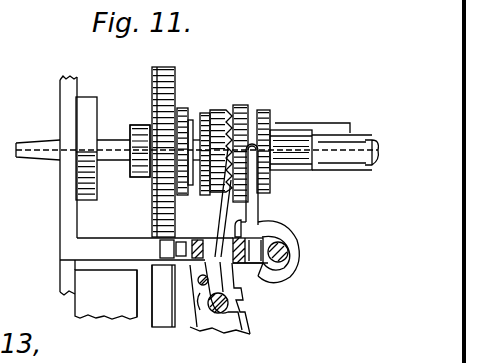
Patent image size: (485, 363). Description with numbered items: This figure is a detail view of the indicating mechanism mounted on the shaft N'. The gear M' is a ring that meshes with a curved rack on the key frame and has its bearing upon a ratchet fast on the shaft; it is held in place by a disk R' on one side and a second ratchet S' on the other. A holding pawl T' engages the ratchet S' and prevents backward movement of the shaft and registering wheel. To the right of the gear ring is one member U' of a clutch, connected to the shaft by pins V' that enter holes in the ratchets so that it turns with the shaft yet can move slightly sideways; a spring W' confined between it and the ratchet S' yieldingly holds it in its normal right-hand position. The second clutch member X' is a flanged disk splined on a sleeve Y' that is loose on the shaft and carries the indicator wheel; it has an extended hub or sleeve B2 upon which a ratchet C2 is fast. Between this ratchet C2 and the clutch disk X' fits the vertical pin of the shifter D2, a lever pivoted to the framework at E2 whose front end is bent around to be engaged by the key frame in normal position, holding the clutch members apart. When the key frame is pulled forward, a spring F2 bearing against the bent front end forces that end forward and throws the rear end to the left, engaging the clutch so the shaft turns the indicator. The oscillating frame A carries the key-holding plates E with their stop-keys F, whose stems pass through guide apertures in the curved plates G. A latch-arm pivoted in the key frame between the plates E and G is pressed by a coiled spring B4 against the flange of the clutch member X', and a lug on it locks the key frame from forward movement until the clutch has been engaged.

The gear M' is at (150, 145).
The disk R' is at (135, 132).
The second ratchet S' is at (191, 130).
The spring W' is at (210, 141).
The clutch member U' is at (229, 130).
The second clutch member X' is at (251, 140).
The pins V' is at (213, 202).
The ratchet C2 is at (270, 118).
The hub or sleeve B2 is at (293, 142).
The sleeve Y' is at (342, 137).
The shaft N' is at (365, 168).
The shifter D2 is at (252, 214).
The hook bracket C'' is at (275, 248).
The block A'' is at (246, 278).
The pivot E2 is at (286, 253).
The spring F2 is at (248, 270).
The holding pawl T' is at (162, 248).
The key-holding plates E is at (106, 294).
The oscillating frame A is at (143, 305).
The coiled spring B4 is at (162, 296).
The stop-keys F is at (218, 313).
The curved plates G is at (247, 327).